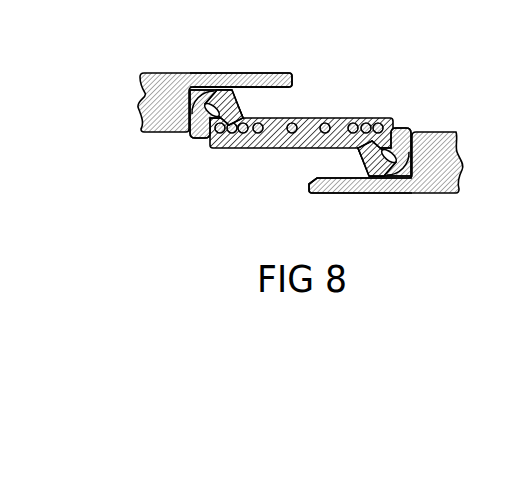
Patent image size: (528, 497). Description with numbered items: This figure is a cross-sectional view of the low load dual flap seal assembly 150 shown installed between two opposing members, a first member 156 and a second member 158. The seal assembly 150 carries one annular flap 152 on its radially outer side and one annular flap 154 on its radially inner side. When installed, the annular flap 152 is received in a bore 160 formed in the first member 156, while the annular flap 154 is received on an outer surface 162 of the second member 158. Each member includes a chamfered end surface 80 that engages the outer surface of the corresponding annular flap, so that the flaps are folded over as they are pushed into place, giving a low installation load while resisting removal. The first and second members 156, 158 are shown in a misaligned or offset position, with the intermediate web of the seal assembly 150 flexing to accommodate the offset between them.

The chamfered end surface 80 is at (292, 88).
The low load dual flap seal assembly 150 is at (228, 197).
The annular flap 152 is at (378, 194).
The annular flap 154 is at (239, 68).
The first member 156 is at (437, 147).
The second member 158 is at (166, 78).
The bore 160 is at (352, 178).
The outer surface 162 is at (252, 88).